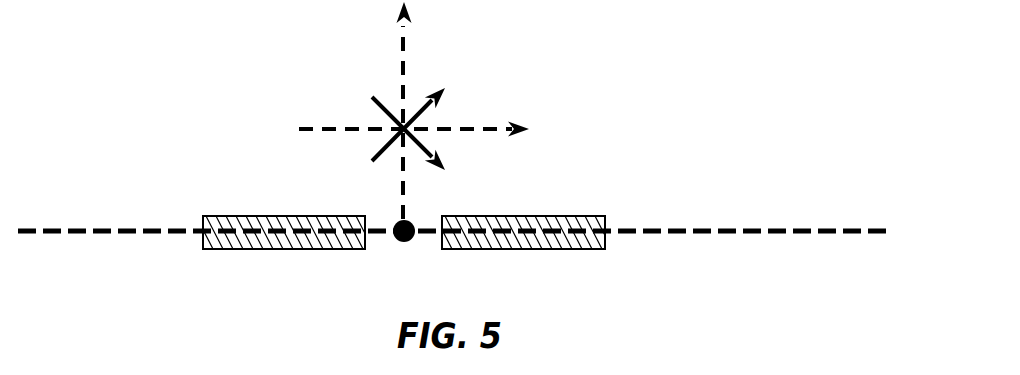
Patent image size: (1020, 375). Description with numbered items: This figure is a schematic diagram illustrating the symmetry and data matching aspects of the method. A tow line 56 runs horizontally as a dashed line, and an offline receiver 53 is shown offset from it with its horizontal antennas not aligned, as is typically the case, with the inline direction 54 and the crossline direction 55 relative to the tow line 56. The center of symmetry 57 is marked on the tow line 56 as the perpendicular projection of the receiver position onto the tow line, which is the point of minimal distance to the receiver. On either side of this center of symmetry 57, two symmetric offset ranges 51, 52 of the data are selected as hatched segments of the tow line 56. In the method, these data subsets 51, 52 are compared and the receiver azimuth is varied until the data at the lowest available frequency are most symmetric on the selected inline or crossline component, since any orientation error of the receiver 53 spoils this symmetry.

The symmetric offset range 51 is at (233, 216).
The symmetric offset range 52 is at (575, 216).
The offline receiver 53 is at (437, 100).
The inline direction 54 is at (513, 132).
The crossline direction 55 is at (400, 50).
The tow line 56 is at (730, 231).
The center of symmetry 57 is at (404, 243).